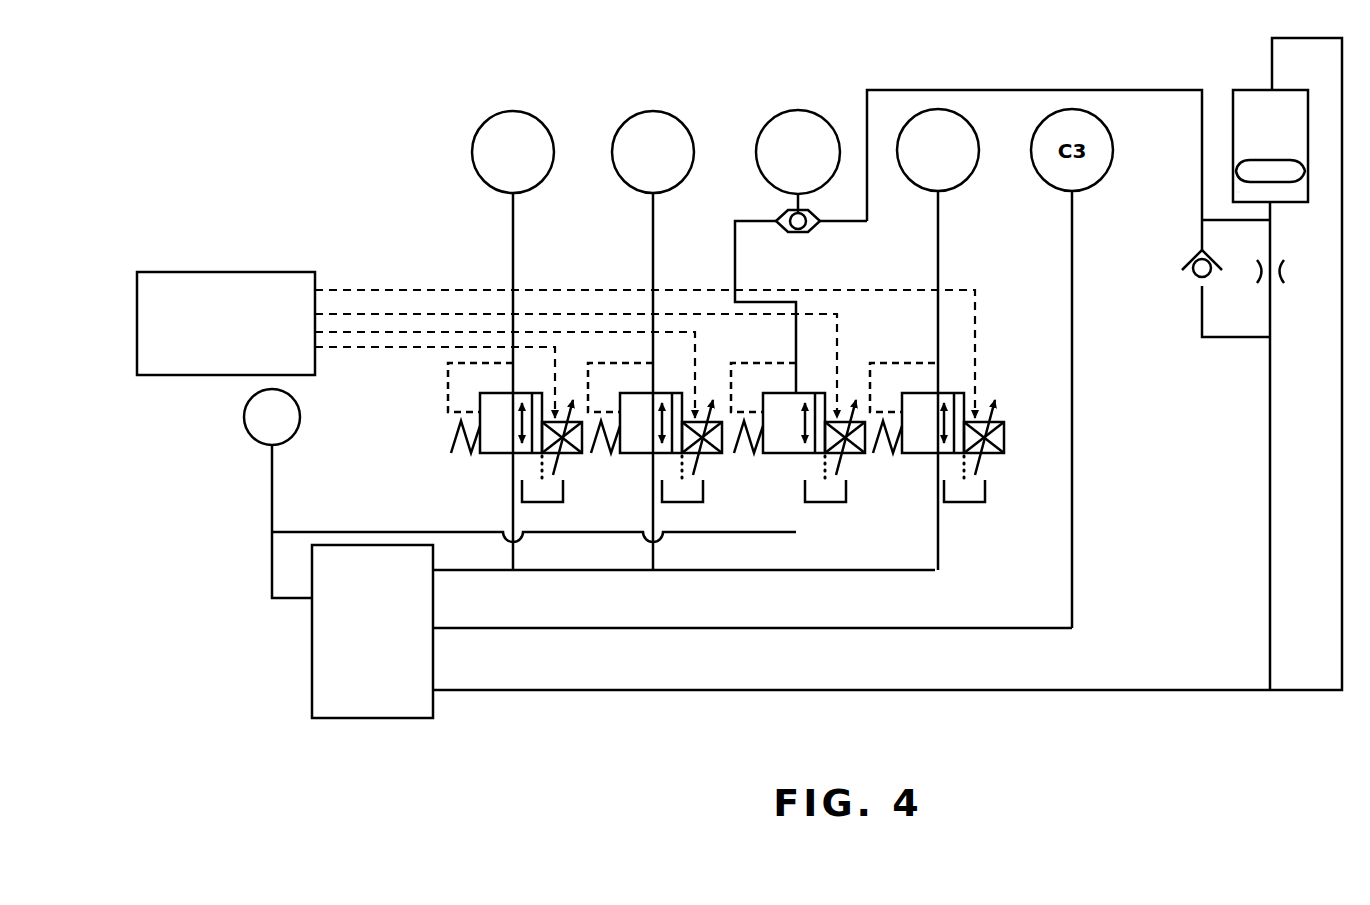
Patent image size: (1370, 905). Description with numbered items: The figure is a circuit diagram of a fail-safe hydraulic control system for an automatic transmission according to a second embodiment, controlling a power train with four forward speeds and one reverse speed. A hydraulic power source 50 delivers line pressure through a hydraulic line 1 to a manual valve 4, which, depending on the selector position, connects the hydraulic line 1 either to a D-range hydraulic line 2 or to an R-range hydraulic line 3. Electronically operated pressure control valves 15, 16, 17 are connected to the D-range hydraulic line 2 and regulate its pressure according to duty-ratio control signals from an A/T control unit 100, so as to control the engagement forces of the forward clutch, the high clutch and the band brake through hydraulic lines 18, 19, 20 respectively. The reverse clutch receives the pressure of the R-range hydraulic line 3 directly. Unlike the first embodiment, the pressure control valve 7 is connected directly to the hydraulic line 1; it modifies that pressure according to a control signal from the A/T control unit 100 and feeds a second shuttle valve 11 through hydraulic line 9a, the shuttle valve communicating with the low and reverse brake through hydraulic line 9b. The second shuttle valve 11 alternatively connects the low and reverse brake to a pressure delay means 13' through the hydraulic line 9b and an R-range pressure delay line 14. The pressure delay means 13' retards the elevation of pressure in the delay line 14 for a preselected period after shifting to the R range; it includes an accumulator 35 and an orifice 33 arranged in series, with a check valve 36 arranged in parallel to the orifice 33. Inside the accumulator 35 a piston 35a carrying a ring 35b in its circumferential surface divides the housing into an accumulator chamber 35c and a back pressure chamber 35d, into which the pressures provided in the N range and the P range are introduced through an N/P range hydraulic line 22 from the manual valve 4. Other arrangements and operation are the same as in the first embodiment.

The A/T control unit 100 is at (233, 276).
The hydraulic power source 50 is at (300, 418).
The hydraulic line 1 is at (272, 497).
The manual valve 4 is at (312, 656).
The D-range hydraulic line 2 is at (575, 572).
The R-range hydraulic line 3 is at (584, 629).
The N/P range hydraulic line 22 is at (804, 692).
The pressure control valve 15 is at (488, 460).
The pressure control valve 16 is at (630, 460).
The pressure control valve 7 is at (768, 458).
The pressure control valve 17 is at (914, 458).
The hydraulic line 18 is at (512, 233).
The hydraulic line 19 is at (653, 233).
The hydraulic line 20 is at (938, 246).
The hydraulic line 9a is at (735, 221).
The hydraulic line 9b is at (782, 208).
The second shuttle valve 11 is at (814, 220).
The R-range pressure delay line 14 is at (1050, 90).
The accumulator 35 is at (1234, 149).
The piston 35a is at (1236, 162).
The ring 35b is at (1236, 174).
The accumulator chamber 35c is at (1236, 192).
The back pressure chamber 35d is at (1246, 132).
The check valve 36 is at (1196, 276).
The orifice 33 is at (1274, 288).
The pressure delay means 13' is at (1303, 234).